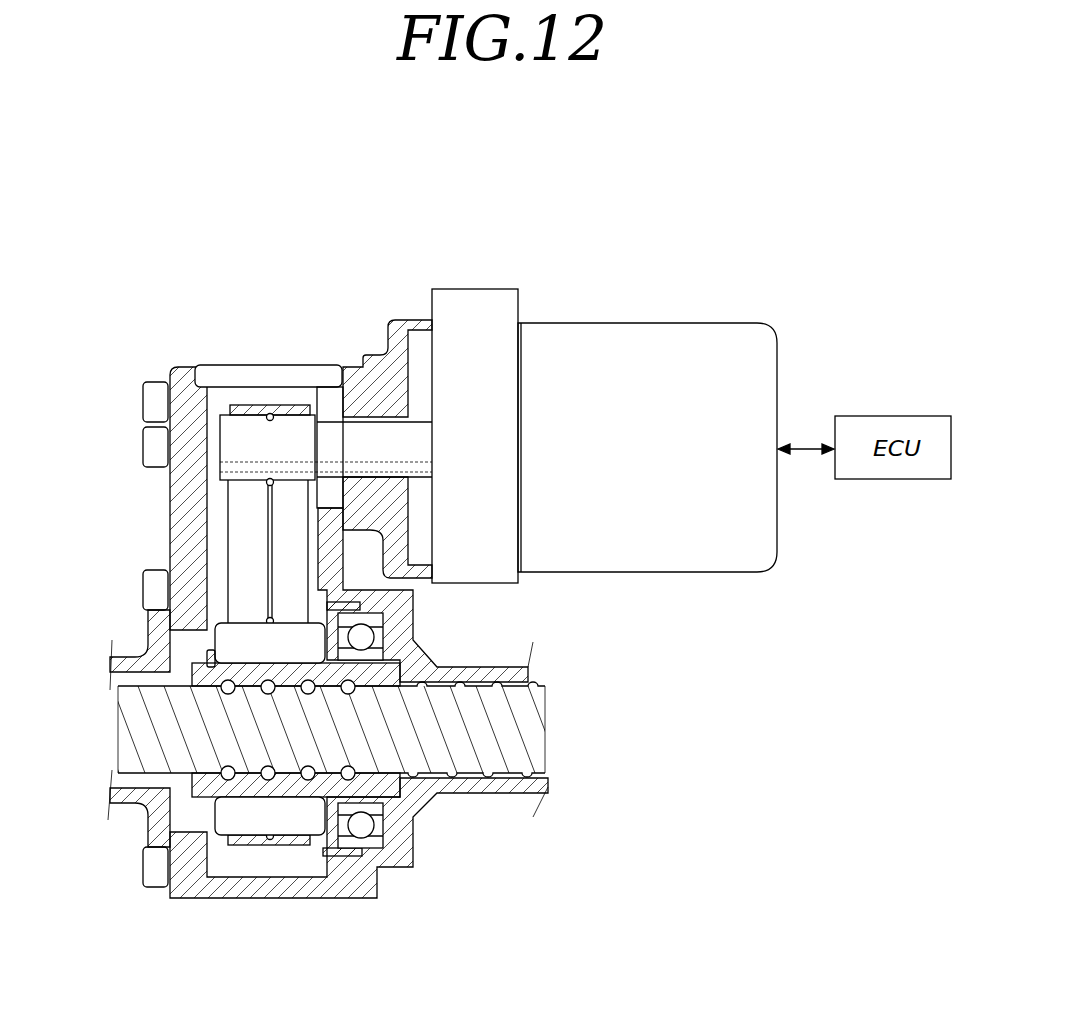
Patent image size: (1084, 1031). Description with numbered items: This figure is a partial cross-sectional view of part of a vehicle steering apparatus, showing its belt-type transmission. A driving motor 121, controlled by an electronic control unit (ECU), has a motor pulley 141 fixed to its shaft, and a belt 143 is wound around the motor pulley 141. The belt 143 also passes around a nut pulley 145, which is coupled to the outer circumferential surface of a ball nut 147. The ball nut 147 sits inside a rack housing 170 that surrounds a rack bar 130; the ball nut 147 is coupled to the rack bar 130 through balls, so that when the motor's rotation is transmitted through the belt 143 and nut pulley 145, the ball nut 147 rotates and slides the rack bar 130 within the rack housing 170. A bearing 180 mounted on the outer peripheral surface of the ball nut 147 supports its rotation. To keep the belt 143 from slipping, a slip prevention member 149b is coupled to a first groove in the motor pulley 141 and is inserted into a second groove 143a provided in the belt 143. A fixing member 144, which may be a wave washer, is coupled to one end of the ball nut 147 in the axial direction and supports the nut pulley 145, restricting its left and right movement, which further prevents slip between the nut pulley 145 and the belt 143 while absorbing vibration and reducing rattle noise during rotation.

The driving motor 121 is at (634, 338).
The rack bar 130 is at (135, 730).
The motor pulley 141 is at (248, 428).
The belt 143 is at (242, 520).
The second groove 143a is at (270, 548).
The fixing member 144 is at (208, 657).
The nut pulley 145 is at (247, 822).
The ball nut 147 is at (243, 670).
The slip prevention member 149b is at (270, 412).
The rack housing 170 is at (313, 890).
The bearing 180 is at (365, 637).